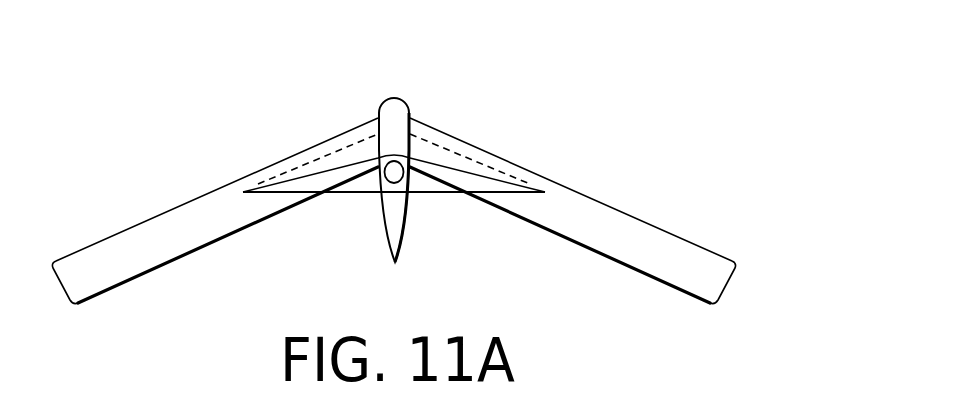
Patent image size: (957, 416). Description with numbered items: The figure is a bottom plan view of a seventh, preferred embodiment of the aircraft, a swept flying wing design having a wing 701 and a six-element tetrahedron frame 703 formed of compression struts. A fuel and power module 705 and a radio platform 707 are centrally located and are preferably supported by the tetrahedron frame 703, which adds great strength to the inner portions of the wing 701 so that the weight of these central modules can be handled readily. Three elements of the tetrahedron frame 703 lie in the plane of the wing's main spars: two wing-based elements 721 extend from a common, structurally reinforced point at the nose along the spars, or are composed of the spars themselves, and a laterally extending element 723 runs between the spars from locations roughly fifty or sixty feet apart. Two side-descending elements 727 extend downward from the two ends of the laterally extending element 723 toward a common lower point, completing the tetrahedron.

The wing 701 is at (642, 233).
The tetrahedron frame 703 is at (485, 177).
The fuel and power module 705 is at (396, 117).
The radio platform 707 is at (381, 184).
The wing-based elements 721 is at (337, 148).
The laterally extending element 723 is at (425, 194).
The side-descending elements 727 is at (447, 168).